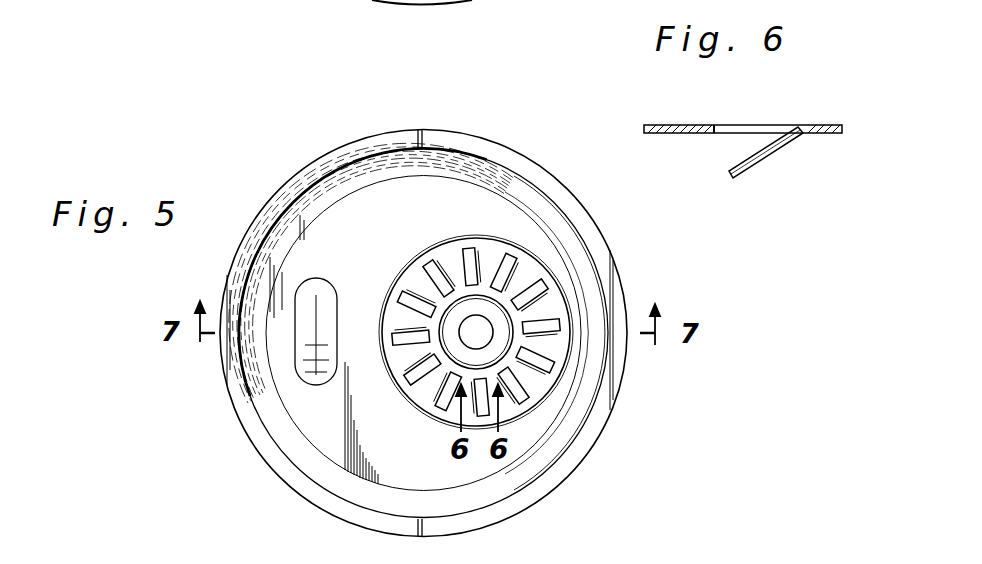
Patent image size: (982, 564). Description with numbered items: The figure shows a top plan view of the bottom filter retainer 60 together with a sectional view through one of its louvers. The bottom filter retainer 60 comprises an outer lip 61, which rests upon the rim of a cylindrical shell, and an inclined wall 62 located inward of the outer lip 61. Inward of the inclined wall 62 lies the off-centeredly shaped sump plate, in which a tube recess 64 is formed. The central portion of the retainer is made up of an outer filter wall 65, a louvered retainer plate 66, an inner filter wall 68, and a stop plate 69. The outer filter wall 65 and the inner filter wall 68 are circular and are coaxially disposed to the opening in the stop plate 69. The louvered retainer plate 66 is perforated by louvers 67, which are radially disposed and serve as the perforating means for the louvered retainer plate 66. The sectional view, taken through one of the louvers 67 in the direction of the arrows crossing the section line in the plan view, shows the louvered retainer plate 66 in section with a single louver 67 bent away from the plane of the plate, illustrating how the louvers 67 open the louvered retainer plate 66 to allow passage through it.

In FIG. 5, the bottom filter retainer 60 is at (232, 410).
In FIG. 5, the outer lip 61 is at (279, 464).
In FIG. 5, the inclined wall 62 is at (558, 443).
In FIG. 5, the tube recess 64 is at (333, 281).
In FIG. 5, the outer filter wall 65 is at (567, 293).
In FIG. 6, the louvered retainer plate 66 is at (688, 125).
In FIG. 5, the louvers 67 is at (497, 268).
In FIG. 6, the louvers 67 is at (778, 150).
In FIG. 5, the inner filter wall 68 is at (440, 322).
In FIG. 5, the stop plate 69 is at (462, 303).